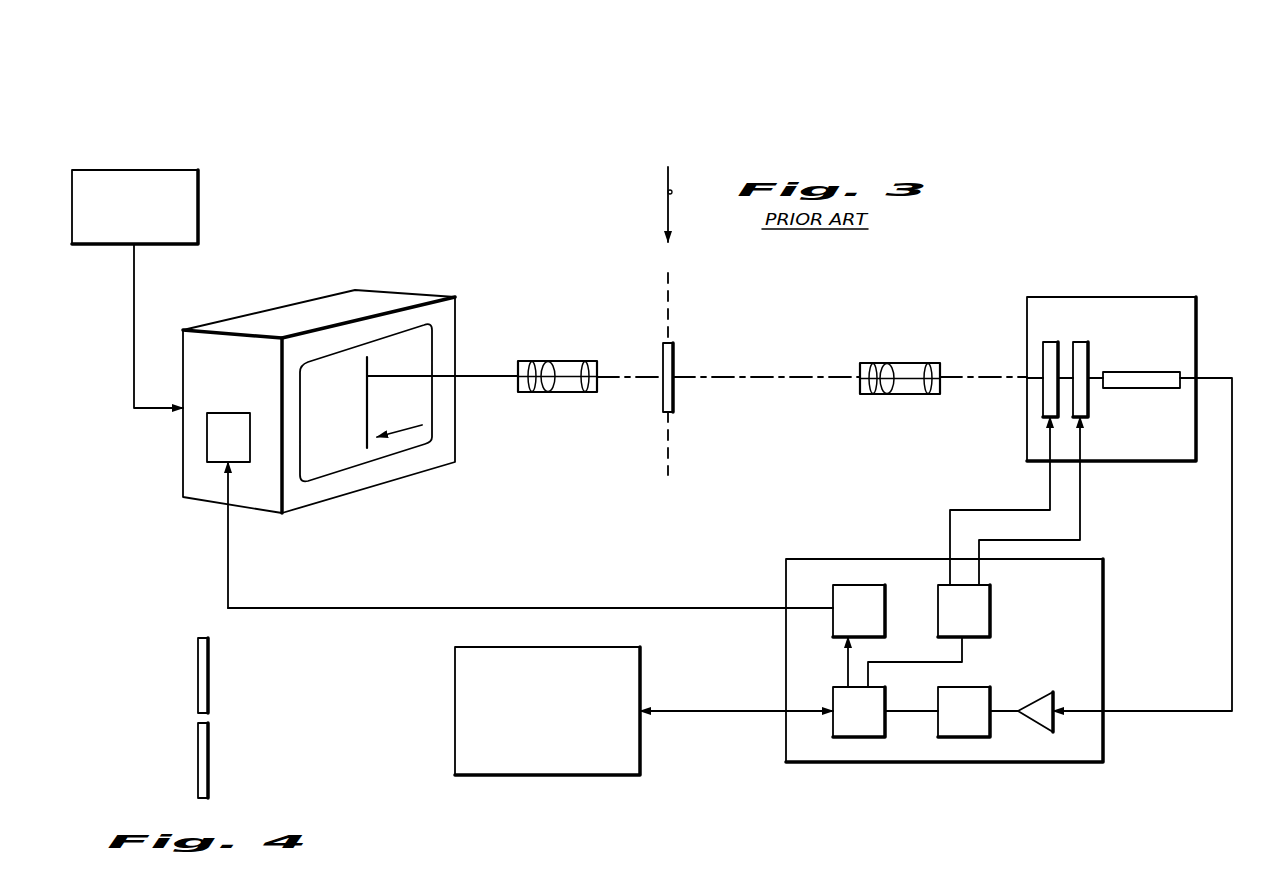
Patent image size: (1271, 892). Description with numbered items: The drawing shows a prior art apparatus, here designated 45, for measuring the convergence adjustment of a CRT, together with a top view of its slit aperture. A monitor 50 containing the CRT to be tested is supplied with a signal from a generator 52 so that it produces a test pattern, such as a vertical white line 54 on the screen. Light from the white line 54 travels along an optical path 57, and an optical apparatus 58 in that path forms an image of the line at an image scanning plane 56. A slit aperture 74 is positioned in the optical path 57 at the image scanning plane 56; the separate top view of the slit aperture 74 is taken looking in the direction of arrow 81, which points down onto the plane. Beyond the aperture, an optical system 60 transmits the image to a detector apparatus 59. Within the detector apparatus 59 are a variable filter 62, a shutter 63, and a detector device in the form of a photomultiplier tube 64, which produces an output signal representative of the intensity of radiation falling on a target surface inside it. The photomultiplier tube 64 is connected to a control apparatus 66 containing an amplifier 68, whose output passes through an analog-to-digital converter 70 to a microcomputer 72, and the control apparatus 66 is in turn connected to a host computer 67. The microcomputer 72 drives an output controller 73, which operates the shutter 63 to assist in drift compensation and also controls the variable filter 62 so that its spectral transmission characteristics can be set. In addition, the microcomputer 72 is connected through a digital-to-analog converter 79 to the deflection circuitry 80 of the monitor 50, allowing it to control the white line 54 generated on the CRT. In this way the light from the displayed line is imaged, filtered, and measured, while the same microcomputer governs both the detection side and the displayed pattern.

In FIG. 3, the measurement system 45 is at (717, 835).
In FIG. 3, the monitor 50 is at (456, 320).
In FIG. 3, the generator 52 is at (202, 200).
In FIG. 3, the vertical white line 54 is at (367, 396).
In FIG. 3, the image scanning plane 56 is at (672, 297).
In FIG. 3, the optical path 57 is at (490, 380).
In FIG. 3, the optical apparatus 58 is at (565, 361).
In FIG. 3, the detector apparatus 59 is at (1118, 296).
In FIG. 3, the optical system 60 is at (903, 361).
In FIG. 3, the variable filter 62 is at (1052, 342).
In FIG. 3, the shutter 63 is at (1090, 357).
In FIG. 3, the photomultiplier tube 64 is at (1152, 390).
In FIG. 3, the control apparatus 66 is at (1023, 765).
In FIG. 3, the host computer 67 is at (547, 776).
In FIG. 3, the amplifier 68 is at (1037, 703).
In FIG. 3, the analog-to-digital converter 70 is at (965, 738).
In FIG. 3, the microcomputer 72 is at (853, 738).
In FIG. 3, the output controller 73 is at (992, 613).
In FIG. 3, the slit aperture 74 is at (677, 357).
In FIG. 4, the slit aperture 74 is at (210, 702).
In FIG. 3, the digital-to-analog converter 79 is at (888, 612).
In FIG. 3, the deflection circuitry 80 is at (215, 438).
In FIG. 3, the arrow 81 is at (668, 194).